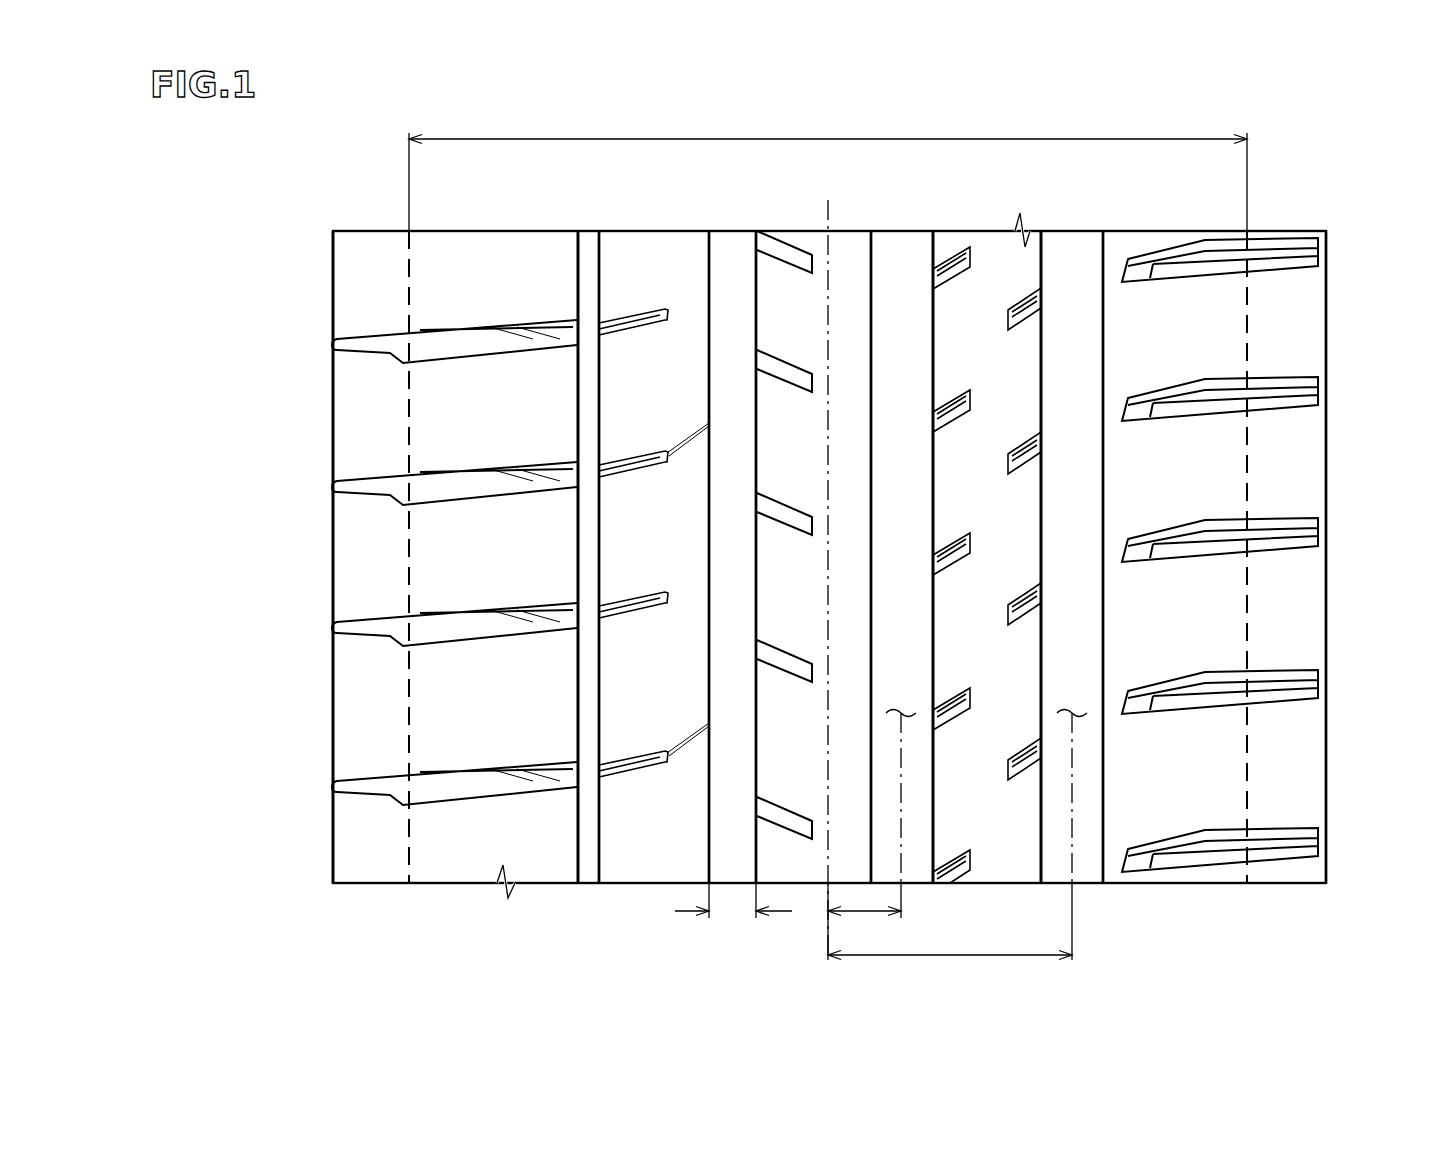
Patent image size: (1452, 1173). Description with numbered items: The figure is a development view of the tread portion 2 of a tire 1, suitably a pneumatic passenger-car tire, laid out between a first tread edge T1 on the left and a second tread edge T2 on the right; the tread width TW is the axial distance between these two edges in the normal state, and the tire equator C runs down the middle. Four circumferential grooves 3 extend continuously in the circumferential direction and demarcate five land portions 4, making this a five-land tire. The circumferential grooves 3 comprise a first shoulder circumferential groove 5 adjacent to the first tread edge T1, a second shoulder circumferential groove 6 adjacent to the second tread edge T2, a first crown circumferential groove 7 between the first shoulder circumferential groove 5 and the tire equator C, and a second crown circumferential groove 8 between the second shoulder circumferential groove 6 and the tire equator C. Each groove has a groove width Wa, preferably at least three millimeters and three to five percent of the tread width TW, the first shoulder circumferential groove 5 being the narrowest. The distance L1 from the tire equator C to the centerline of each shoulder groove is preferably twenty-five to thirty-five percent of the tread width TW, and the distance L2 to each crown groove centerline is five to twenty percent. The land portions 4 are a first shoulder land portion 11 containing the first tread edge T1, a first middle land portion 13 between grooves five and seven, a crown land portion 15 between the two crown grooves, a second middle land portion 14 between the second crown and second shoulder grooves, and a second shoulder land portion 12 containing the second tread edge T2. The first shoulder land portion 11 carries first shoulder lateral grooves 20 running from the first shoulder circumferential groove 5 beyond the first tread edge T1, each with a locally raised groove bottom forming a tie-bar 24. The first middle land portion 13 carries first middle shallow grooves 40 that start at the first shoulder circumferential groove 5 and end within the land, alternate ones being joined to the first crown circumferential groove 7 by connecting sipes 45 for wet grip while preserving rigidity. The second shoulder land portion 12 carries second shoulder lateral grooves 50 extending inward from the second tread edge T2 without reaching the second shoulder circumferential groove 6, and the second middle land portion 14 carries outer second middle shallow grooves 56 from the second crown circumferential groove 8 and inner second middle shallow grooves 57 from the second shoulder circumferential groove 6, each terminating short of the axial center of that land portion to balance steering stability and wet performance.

The tire 1 is at (1121, 220).
The tread portion 2 is at (777, 218).
The circumferential grooves 3 is at (1072, 475).
The land portions 4 is at (444, 266).
The first shoulder circumferential groove 5 is at (588, 266).
The second shoulder circumferential groove 6 is at (1071, 278).
The first crown circumferential groove 7 is at (729, 266).
The second crown circumferential groove 8 is at (904, 266).
The first shoulder land portion 11 is at (508, 266).
The second shoulder land portion 12 is at (1166, 300).
The first middle land portion 13 is at (651, 266).
The second middle land portion 14 is at (995, 278).
The crown land portion 15 is at (846, 266).
The first shoulder lateral grooves 20 is at (450, 343).
The tie-bar 24 is at (554, 471).
The first middle shallow grooves 40 is at (630, 769).
The connecting sipes 45 is at (682, 775).
The second shoulder lateral grooves 50 is at (1209, 400).
The outer second middle shallow grooves 56 is at (955, 556).
The inner second middle shallow grooves 57 is at (1030, 606).
The first tread edge T1 is at (405, 265).
The second tread edge T2 is at (1250, 265).
The tire equator C is at (828, 567).
The tread width TW is at (828, 168).
The groove width Wa is at (733, 915).
The distance L1 is at (957, 852).
The distance L2 is at (872, 829).